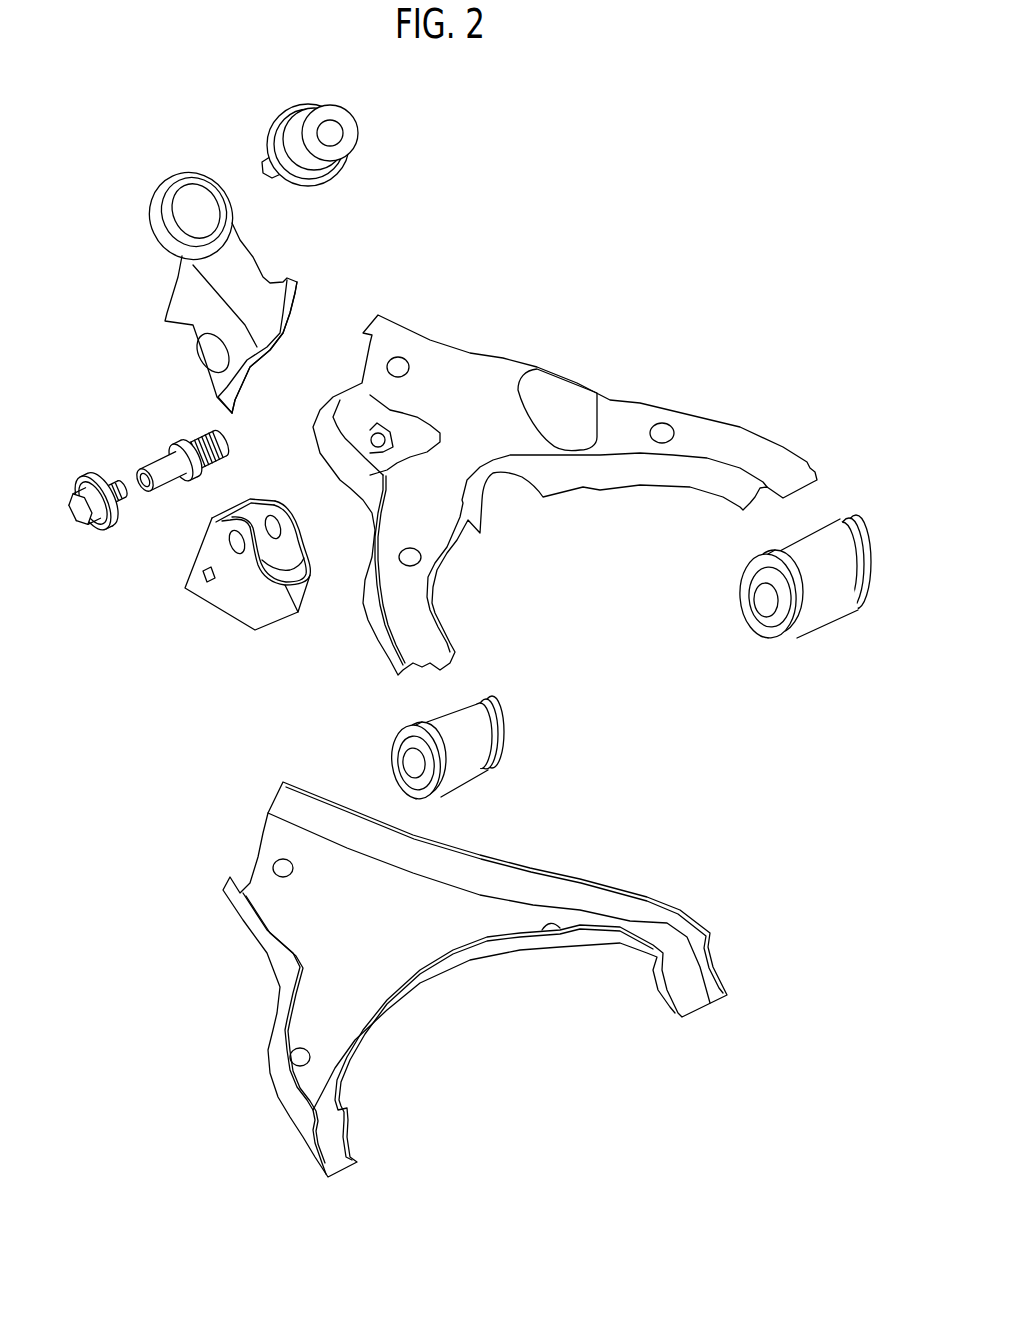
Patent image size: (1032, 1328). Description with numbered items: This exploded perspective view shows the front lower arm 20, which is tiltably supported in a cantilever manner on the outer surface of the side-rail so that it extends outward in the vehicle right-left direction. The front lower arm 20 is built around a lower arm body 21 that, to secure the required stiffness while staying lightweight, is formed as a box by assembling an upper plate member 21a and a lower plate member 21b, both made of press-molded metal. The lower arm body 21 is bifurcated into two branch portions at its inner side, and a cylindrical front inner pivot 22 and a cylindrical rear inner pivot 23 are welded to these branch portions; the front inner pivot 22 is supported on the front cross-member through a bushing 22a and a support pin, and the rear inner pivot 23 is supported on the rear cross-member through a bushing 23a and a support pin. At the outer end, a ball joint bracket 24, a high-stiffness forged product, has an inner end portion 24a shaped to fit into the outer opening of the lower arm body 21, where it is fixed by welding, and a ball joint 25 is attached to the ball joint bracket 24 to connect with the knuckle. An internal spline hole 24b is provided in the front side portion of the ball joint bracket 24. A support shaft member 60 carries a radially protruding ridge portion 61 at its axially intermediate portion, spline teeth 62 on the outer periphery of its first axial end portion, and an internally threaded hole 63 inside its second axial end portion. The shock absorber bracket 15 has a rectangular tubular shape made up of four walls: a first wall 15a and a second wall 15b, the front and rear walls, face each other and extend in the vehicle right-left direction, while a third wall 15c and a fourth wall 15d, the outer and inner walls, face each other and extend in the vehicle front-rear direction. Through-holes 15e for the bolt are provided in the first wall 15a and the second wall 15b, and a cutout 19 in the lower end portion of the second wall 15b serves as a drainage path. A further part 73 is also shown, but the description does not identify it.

The shock absorber bracket 15 is at (278, 623).
The first wall 15a is at (253, 577).
The second wall 15b is at (285, 550).
The third wall 15c is at (235, 507).
The fourth wall 15d is at (302, 588).
The through-holes 15e is at (238, 530).
The cutout 19 is at (281, 523).
The front lower arm 20 is at (443, 295).
The lower arm body 21 is at (608, 623).
The upper plate member 21a is at (451, 571).
The lower plate member 21b is at (557, 873).
The front inner pivot 22 is at (473, 767).
The bushing 22a is at (410, 762).
The rear inner pivot 23 is at (833, 603).
The bushing 23a is at (768, 627).
The ball joint bracket 24 is at (250, 257).
The inner end portion 24a is at (297, 320).
The internal spline hole 24b is at (210, 350).
The ball joint 25 is at (355, 143).
The support shaft member 60 is at (150, 460).
The ridge portion 61 is at (180, 447).
The spline teeth 62 is at (207, 443).
The internally threaded hole 63 is at (145, 487).
The bolt 73 is at (90, 530).